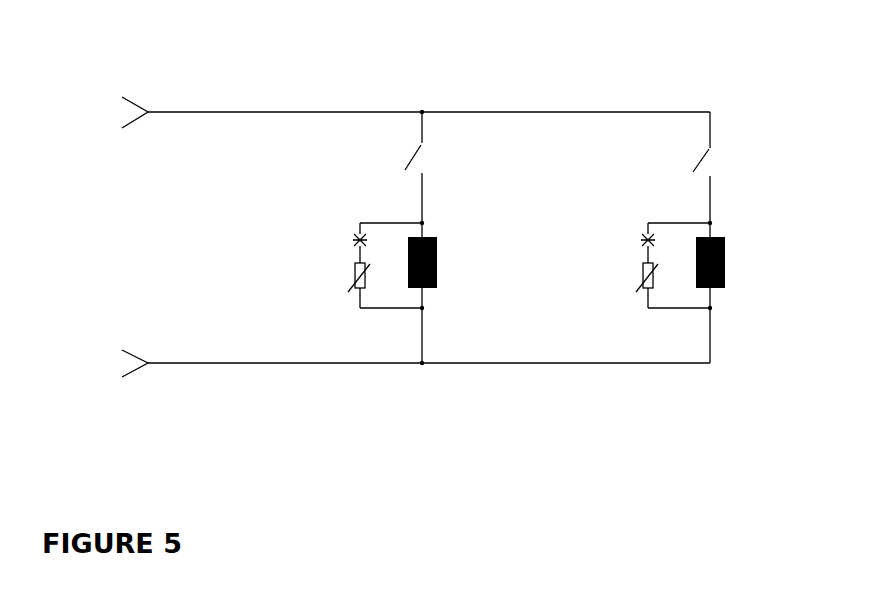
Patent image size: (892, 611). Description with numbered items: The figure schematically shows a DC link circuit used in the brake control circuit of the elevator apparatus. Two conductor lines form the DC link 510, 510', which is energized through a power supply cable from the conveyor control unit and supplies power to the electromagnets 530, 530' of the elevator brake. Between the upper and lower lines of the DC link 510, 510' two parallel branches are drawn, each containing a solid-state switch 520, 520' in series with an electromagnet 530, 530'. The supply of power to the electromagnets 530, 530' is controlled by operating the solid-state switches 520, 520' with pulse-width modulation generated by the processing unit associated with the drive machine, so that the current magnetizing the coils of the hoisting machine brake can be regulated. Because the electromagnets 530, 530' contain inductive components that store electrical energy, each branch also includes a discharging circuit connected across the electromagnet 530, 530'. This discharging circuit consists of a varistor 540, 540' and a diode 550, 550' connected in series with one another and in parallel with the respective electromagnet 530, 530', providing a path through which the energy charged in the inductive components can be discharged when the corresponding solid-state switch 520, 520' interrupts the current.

The DC link 510 is at (416, 71).
The DC link 510' is at (416, 398).
The solid-state switch 520 is at (472, 237).
The solid-state switch 520' is at (761, 237).
The electromagnet 530 is at (447, 295).
The electromagnet 530' is at (737, 300).
The varistor 540 is at (331, 269).
The varistor 540' is at (615, 269).
The diode 550 is at (364, 243).
The diode 550' is at (652, 244).